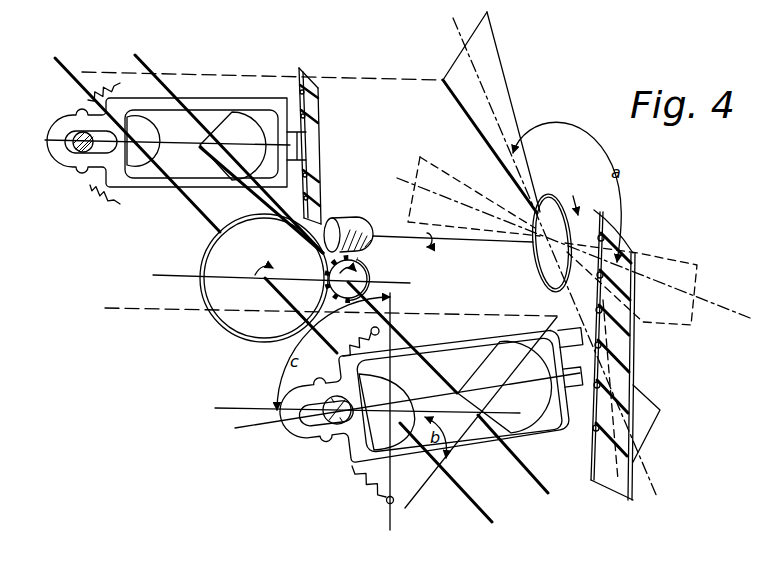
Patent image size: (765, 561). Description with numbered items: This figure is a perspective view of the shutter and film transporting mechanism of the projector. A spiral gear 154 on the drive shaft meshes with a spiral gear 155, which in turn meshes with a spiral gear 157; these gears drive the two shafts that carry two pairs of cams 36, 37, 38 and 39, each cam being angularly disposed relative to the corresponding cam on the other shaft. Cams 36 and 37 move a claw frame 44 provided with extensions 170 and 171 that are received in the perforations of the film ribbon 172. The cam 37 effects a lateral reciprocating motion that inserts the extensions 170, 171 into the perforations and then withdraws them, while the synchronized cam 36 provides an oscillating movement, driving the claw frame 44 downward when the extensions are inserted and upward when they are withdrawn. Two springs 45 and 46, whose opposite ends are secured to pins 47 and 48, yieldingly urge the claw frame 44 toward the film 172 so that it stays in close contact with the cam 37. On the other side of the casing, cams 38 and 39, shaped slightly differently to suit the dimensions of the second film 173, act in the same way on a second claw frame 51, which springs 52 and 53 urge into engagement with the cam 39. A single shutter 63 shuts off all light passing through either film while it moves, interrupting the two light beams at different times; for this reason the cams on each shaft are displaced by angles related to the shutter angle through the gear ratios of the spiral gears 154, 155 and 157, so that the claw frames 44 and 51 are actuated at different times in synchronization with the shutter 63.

The cam 36 is at (487, 360).
The cam 37 is at (380, 425).
The cam 38 is at (240, 122).
The cam 39 is at (140, 162).
The claw frame 44 is at (547, 432).
The spring 45 is at (349, 338).
The spring 46 is at (373, 491).
The pin 47 is at (380, 331).
The pin 48 is at (476, 422).
The claw frame 51 is at (190, 101).
The spring 52 is at (95, 196).
The spring 53 is at (103, 90).
The shutter 63 is at (490, 62).
The spiral gear 154 is at (350, 226).
The spiral gear 155 is at (360, 276).
The spiral gear 157 is at (227, 324).
The extension 170 is at (570, 343).
The extension 171 is at (575, 386).
The film ribbon 172 is at (633, 490).
The second film 173 is at (302, 86).